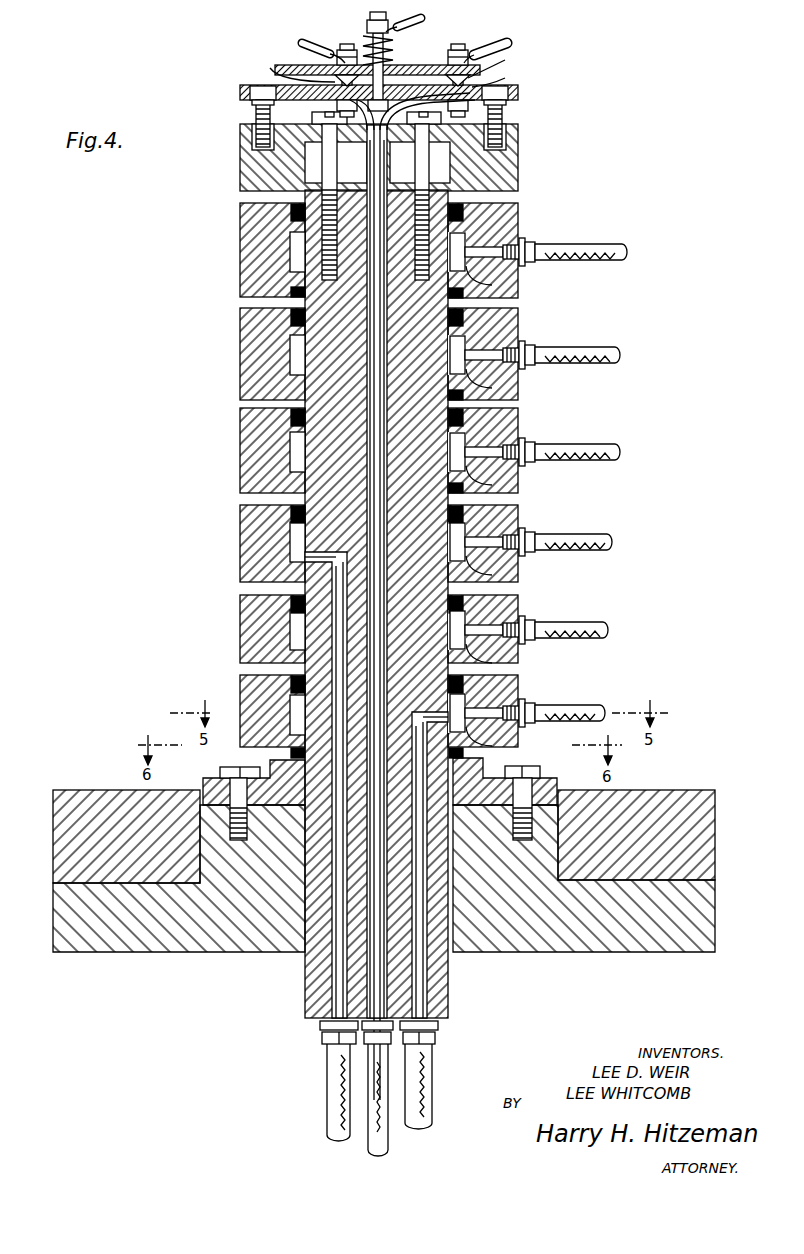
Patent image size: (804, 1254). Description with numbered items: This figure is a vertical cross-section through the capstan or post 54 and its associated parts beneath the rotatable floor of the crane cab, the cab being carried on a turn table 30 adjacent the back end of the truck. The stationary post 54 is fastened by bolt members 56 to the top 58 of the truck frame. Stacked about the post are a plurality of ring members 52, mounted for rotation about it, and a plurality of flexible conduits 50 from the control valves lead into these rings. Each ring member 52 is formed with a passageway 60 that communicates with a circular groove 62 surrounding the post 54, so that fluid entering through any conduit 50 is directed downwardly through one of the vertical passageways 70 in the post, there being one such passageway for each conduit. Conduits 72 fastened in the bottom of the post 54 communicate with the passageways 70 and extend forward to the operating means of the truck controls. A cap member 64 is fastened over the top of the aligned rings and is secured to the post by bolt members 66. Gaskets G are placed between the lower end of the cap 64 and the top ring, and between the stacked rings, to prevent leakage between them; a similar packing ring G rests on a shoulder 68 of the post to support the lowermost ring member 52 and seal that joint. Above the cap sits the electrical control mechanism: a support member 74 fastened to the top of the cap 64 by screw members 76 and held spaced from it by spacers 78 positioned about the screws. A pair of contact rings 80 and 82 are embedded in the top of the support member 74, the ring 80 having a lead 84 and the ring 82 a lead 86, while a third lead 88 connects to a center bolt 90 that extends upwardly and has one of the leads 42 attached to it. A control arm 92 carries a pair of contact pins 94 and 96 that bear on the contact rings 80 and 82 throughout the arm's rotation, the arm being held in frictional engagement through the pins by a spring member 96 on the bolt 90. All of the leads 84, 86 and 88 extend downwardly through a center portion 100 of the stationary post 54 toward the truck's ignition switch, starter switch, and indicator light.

The turn table 30 is at (716, 834).
The leads 42 is at (308, 38).
The flexible conduits 50 is at (594, 263).
The ring members 52 is at (518, 210).
The capstan or post 54 is at (330, 452).
The bolt members 56 is at (222, 770).
The top of the truck frame 58 is at (555, 952).
The passageway 60 is at (492, 285).
The circular groove 62 is at (296, 252).
The cap member 64 is at (240, 165).
The bolt members 66 is at (331, 166).
The shoulder 68 is at (290, 760).
The vertical passageways 70 is at (332, 993).
The conduits 72 is at (415, 1084).
The support member 74 is at (242, 92).
The screw members 76 is at (256, 84).
The spacers 78 is at (254, 115).
The contact ring 80 is at (270, 68).
The contact ring 82 is at (430, 76).
The lead 84 is at (386, 367).
The lead 86 is at (368, 386).
The third lead 88 is at (369, 350).
The center bolt 90 is at (320, 66).
The control arm 92 is at (497, 62).
The contact pin 94 is at (498, 77).
The spring member 96 is at (367, 41).
The center portion 100 is at (338, 960).
The gaskets G is at (296, 212).